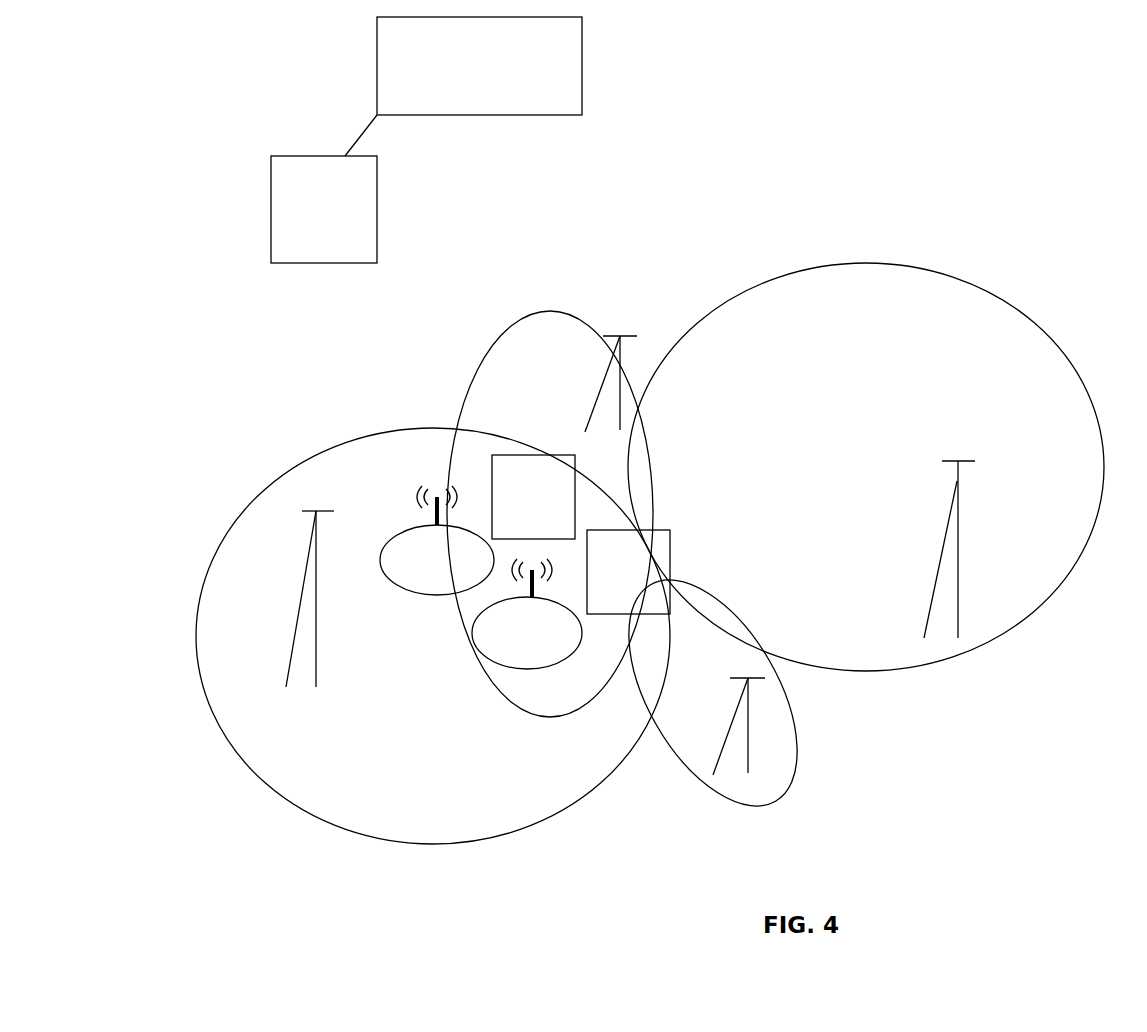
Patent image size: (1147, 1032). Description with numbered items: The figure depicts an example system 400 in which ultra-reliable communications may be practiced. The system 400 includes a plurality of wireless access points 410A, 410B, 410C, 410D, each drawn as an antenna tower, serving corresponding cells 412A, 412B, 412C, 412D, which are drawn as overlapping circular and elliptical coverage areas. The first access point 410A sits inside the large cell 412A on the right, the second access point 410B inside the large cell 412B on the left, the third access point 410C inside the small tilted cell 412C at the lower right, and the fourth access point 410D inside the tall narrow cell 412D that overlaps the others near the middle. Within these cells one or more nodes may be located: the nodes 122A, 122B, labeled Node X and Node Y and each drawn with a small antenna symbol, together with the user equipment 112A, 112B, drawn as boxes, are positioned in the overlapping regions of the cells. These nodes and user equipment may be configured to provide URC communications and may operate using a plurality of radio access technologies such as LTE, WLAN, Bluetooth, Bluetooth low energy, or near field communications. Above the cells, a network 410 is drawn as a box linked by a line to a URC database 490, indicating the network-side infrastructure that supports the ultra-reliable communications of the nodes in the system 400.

The system 400 is at (874, 83).
The network 410 is at (544, 78).
The URC database 490 is at (353, 248).
The cell 412A is at (893, 262).
The cell 412B is at (467, 430).
The cell 412C is at (797, 767).
The cell 412D is at (603, 312).
The wireless access point 410A is at (938, 566).
The wireless access point 410B is at (297, 615).
The wireless access point 410C is at (723, 735).
The wireless access point 410D is at (600, 391).
The user equipment 112A is at (507, 523).
The user equipment 112B is at (602, 598).
The node 122A is at (411, 584).
The node 122B is at (501, 657).